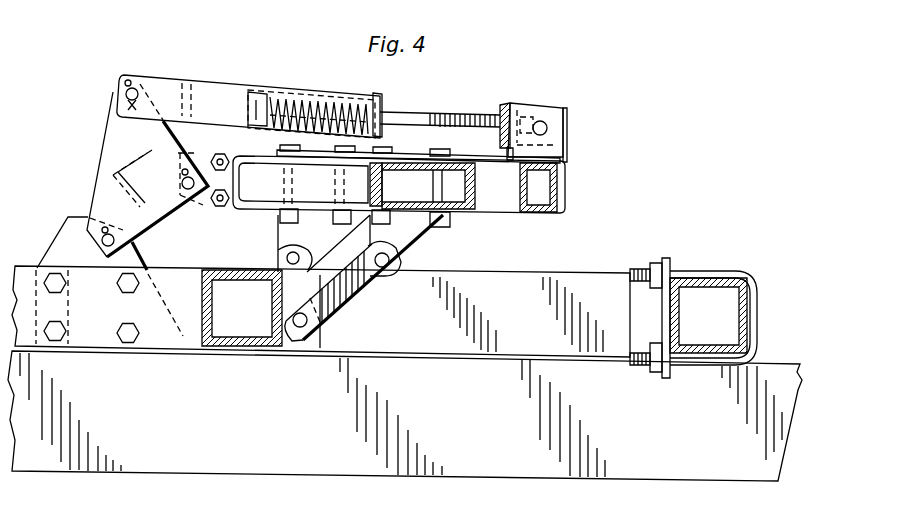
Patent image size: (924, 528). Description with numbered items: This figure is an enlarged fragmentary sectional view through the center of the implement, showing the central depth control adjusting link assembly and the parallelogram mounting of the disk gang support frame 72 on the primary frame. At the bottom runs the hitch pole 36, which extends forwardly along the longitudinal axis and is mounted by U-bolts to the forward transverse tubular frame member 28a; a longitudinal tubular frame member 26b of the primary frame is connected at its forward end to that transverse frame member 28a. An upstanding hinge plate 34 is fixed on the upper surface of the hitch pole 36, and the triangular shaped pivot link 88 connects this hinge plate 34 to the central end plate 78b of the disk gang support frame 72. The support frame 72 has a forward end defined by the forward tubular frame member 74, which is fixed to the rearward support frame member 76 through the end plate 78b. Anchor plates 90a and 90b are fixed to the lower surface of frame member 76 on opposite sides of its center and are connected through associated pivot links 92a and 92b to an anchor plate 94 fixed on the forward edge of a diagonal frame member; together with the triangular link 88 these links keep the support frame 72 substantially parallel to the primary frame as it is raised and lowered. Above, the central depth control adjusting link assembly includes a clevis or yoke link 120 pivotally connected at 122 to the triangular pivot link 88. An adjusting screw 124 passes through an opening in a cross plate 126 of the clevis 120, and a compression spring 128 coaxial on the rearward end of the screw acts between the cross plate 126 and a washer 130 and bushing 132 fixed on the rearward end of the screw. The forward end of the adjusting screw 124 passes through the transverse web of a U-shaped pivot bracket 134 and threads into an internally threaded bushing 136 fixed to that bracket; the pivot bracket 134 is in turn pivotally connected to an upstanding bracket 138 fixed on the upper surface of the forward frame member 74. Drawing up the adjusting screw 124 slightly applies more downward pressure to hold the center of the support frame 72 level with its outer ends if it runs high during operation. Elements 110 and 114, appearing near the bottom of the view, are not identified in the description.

The pivotal connection 122 is at (125, 88).
The clevis or yoke link 120 is at (198, 87).
The bushing 132 is at (248, 96).
The washer 130 is at (272, 92).
The compression spring 128 is at (305, 94).
The cross plate 126 is at (377, 97).
The adjusting screw 124 is at (456, 112).
The U-shaped pivot bracket 134 is at (510, 102).
The internally threaded bushing 136 is at (527, 92).
The upstanding bracket 138 is at (567, 155).
The disk gang support frame 72 is at (595, 193).
The forward tubular frame member 74 is at (566, 214).
The rearward support frame member 76 is at (474, 186).
The triangular shaped pivot link 88 is at (115, 136).
The upstanding hinge plate 34 is at (58, 250).
The central end plate 78b is at (184, 198).
The anchor plate 90b is at (280, 226).
The pivot link 92b is at (278, 254).
The anchor plate 90a is at (413, 237).
The pivot link 92a is at (353, 292).
The longitudinal tubular frame member 26b is at (593, 268).
The transverse tubular frame member 28a is at (723, 245).
The anchor plate 94 is at (308, 348).
The hitch pole 36 is at (212, 458).
The ground member 110 is at (666, 518).
The ground member 114 is at (746, 512).